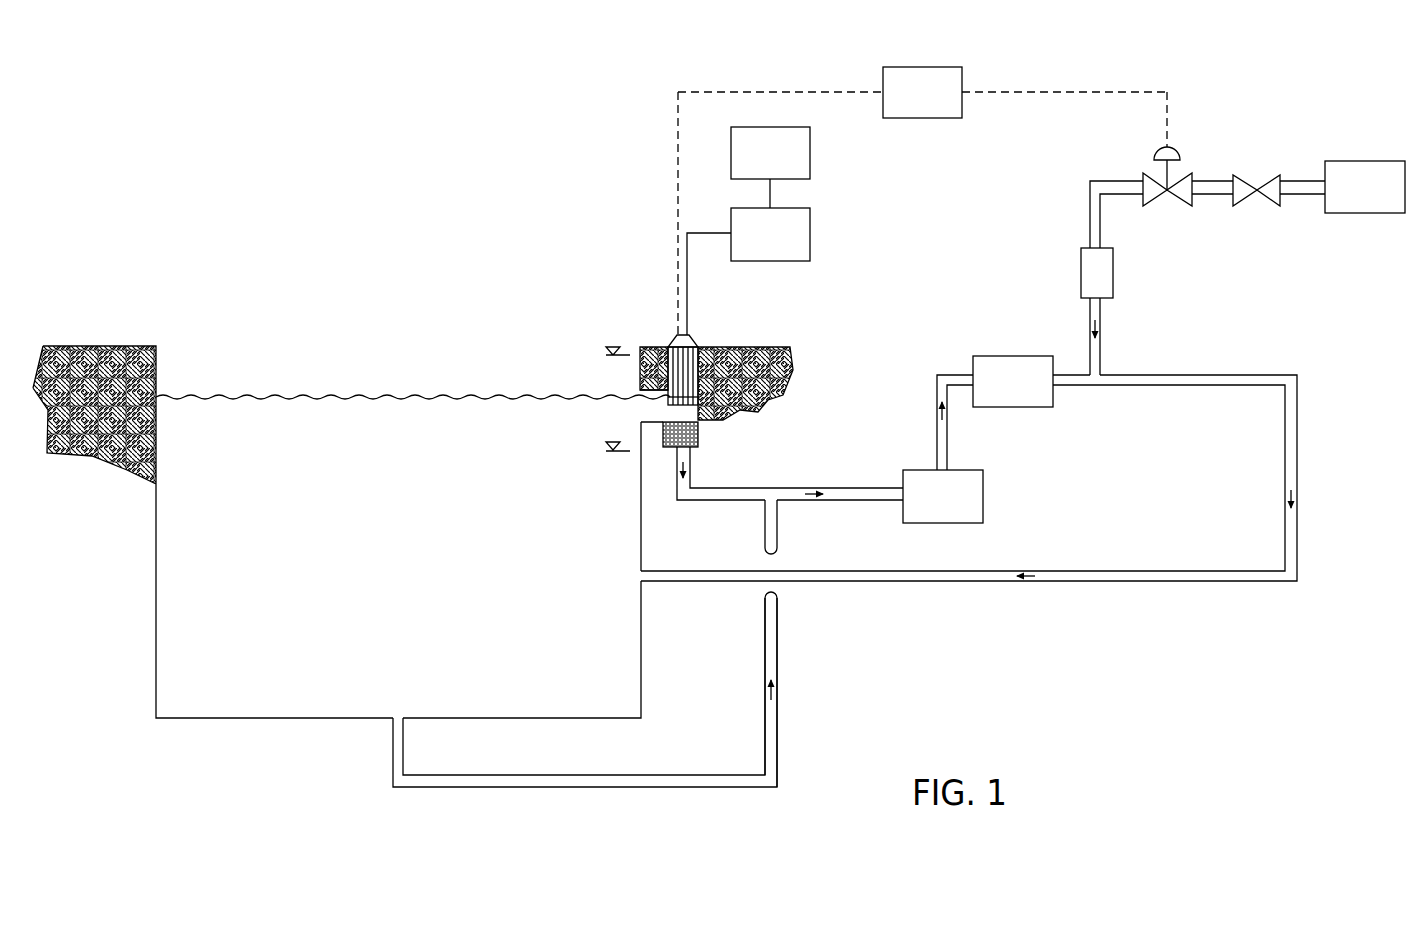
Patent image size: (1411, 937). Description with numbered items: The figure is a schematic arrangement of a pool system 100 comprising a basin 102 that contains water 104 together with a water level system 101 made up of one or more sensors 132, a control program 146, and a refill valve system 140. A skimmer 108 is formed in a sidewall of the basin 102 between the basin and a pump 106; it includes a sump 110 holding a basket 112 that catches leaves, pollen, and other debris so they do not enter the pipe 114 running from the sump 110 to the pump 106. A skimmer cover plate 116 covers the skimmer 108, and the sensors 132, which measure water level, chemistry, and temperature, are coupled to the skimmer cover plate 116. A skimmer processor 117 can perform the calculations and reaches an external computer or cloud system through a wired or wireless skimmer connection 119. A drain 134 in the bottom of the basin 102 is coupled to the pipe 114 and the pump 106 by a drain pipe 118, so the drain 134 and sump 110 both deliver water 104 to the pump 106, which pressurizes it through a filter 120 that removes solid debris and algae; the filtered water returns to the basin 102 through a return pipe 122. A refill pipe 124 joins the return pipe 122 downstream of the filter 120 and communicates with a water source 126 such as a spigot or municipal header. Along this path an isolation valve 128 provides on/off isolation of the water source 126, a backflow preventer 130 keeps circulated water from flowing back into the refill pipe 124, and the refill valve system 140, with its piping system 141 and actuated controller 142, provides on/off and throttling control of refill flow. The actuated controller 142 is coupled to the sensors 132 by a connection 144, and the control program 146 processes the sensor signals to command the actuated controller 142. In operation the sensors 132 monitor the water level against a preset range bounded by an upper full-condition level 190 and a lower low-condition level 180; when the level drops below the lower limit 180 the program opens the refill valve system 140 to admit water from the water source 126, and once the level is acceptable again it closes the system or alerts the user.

The pool system 100 is at (180, 83).
The water level system 101 is at (898, 343).
The basin 102 is at (155, 638).
The water 104 is at (414, 560).
The pump 106 is at (961, 508).
The skimmer 108 is at (725, 423).
The sump 110 is at (705, 440).
The basket 112 is at (690, 452).
The pipe 114 is at (720, 502).
The skimmer cover plate 116 is at (692, 340).
The skimmer processor 117 is at (788, 246).
The drain pipe 118 is at (778, 715).
The skimmer connection 119 is at (788, 165).
The filter 120 is at (1031, 393).
The return pipe 122 is at (1047, 585).
The refill pipe 124 is at (1103, 327).
The water source 126 is at (1383, 198).
The isolation valve 128 is at (1270, 178).
The backflow preventer 130 is at (1081, 270).
The sensors 132 is at (665, 395).
The drain 134 is at (393, 735).
The refill valve system 140 is at (1175, 200).
The piping system 141 is at (1220, 345).
The actuated controller 142 is at (1177, 148).
The connection 144 is at (1082, 92).
The control program 146 is at (940, 104).
The representative water level (lower limit) 180 is at (612, 455).
The representative water level (upper limit) 190 is at (628, 353).